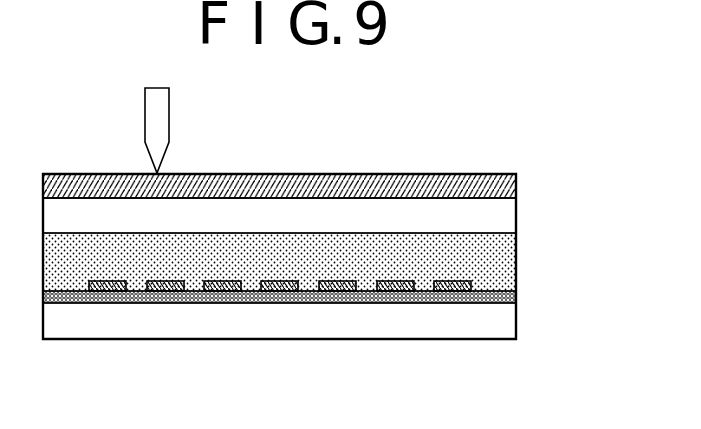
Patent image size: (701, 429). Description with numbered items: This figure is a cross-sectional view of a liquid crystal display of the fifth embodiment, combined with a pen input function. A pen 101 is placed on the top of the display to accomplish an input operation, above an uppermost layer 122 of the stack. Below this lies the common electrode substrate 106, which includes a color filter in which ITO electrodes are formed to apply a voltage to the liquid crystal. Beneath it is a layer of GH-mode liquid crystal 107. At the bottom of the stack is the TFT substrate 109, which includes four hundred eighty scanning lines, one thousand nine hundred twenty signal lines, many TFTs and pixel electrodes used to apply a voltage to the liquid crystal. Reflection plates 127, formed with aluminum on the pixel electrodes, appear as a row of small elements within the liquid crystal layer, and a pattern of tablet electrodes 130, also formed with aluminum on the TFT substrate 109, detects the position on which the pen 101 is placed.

The pen 101 is at (171, 120).
The protective layer 122 is at (517, 183).
The common electrode substrate 106 is at (505, 223).
The GH-mode liquid crystal 107 is at (517, 262).
The reflection plates 127 is at (127, 303).
The tablet electrodes 130 is at (512, 300).
The TFT substrate 109 is at (505, 325).